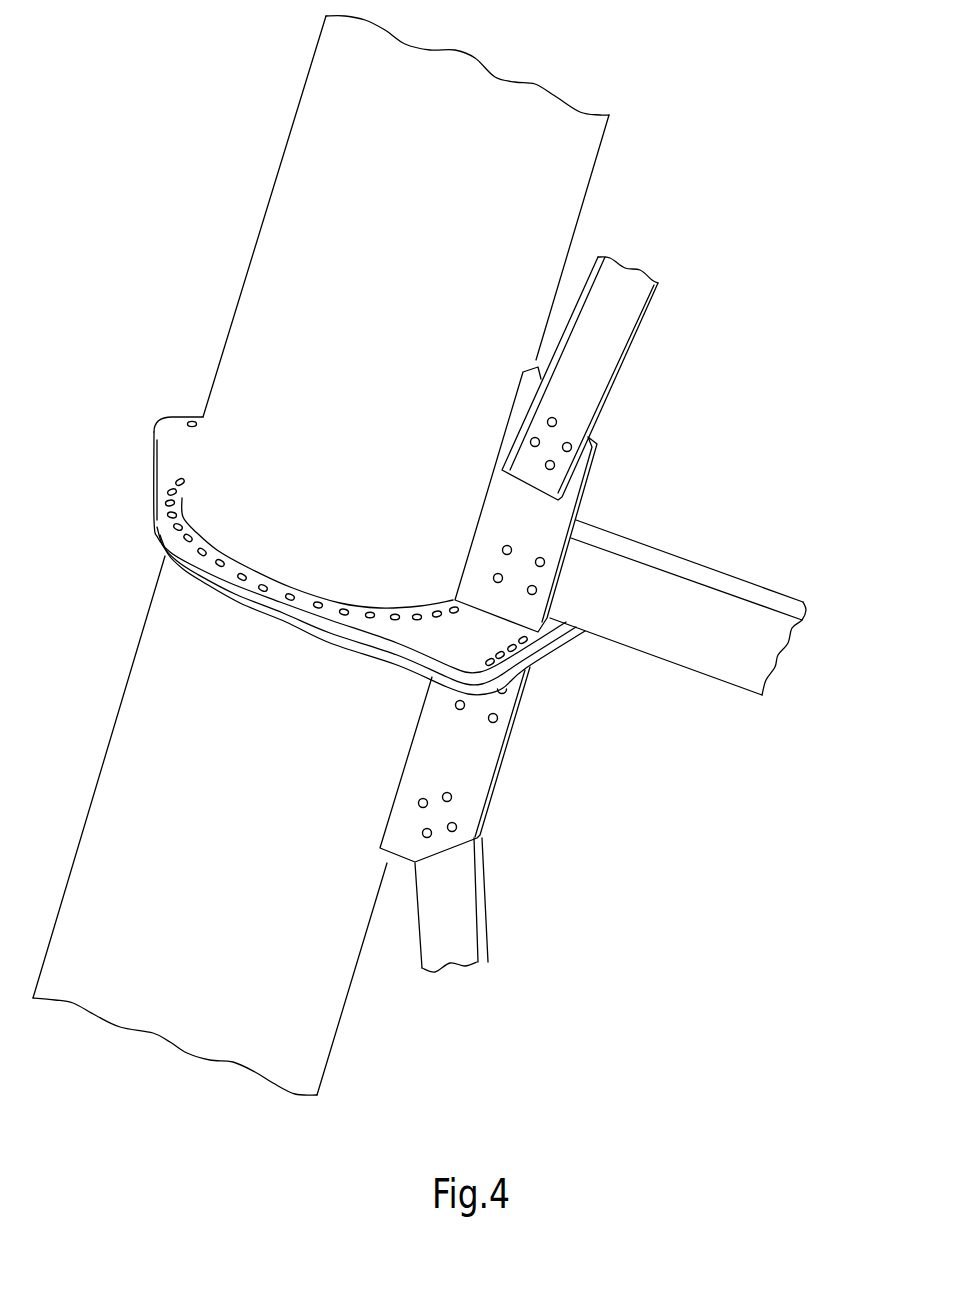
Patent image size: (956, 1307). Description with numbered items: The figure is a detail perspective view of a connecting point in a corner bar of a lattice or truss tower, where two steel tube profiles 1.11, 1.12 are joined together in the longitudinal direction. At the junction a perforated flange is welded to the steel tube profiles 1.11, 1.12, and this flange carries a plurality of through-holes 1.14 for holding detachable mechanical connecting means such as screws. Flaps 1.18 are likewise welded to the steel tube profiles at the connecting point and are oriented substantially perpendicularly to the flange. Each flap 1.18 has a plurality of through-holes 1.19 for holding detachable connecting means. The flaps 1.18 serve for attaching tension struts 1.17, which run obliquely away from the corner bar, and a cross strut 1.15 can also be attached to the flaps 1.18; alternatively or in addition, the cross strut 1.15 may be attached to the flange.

The steel tube profile 1.11 is at (310, 1030).
The steel tube profile 1.12 is at (568, 168).
The through-holes 1.14 is at (417, 613).
The cross strut 1.15 is at (697, 653).
The tension strut 1.17 is at (607, 347).
The flap 1.18 is at (552, 517).
The through-holes 1.19 is at (420, 797).